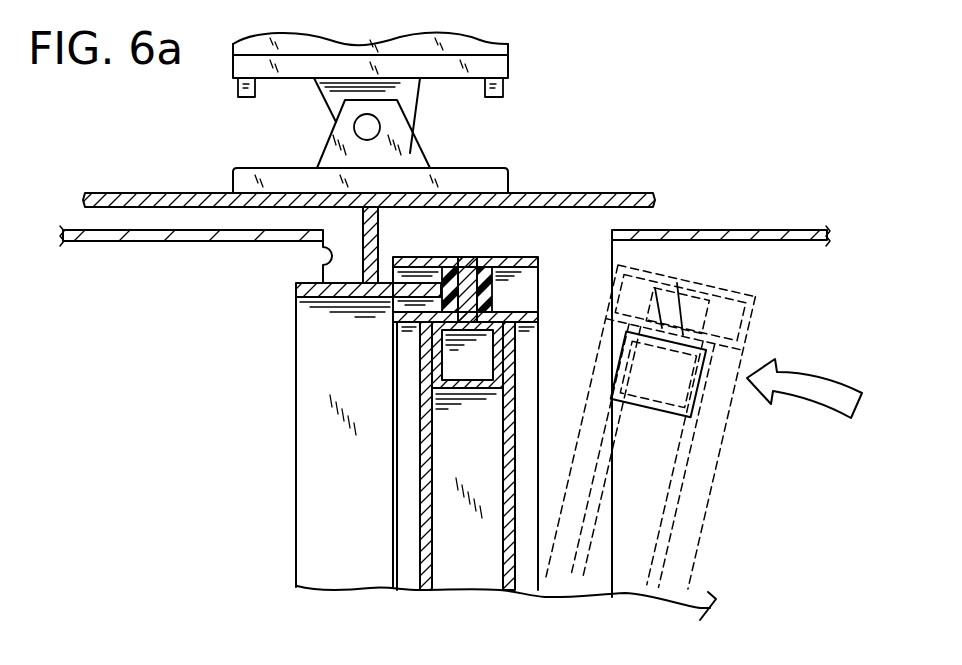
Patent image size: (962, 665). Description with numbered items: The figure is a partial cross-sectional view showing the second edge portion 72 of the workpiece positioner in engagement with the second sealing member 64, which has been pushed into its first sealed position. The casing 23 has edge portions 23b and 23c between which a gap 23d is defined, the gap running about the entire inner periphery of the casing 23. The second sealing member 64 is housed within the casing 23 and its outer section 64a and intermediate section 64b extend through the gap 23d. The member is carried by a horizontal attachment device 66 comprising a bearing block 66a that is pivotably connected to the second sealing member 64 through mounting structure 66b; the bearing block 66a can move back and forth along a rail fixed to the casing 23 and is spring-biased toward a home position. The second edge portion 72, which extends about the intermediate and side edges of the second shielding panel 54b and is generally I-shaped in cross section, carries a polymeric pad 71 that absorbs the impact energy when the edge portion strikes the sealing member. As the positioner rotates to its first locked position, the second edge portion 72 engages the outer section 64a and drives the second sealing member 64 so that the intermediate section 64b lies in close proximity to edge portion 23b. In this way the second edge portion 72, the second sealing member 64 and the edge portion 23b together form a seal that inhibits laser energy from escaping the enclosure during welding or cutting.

The horizontal attachment device 66 is at (545, 124).
The bearing block 66a is at (477, 53).
The mounting structure 66b is at (430, 130).
The second sealing member 64 is at (617, 193).
The outer section of second sealing member 64a is at (312, 447).
The intermediate section of second sealing member 64b is at (377, 253).
The polymeric pad 71 is at (485, 262).
The second edge portion 72 is at (540, 262).
The casing 23 is at (773, 230).
The edge portion of casing 23b is at (323, 264).
The edge portion of casing 23c is at (611, 566).
The gap 23d is at (559, 367).
The second shielding panel 54b is at (423, 540).